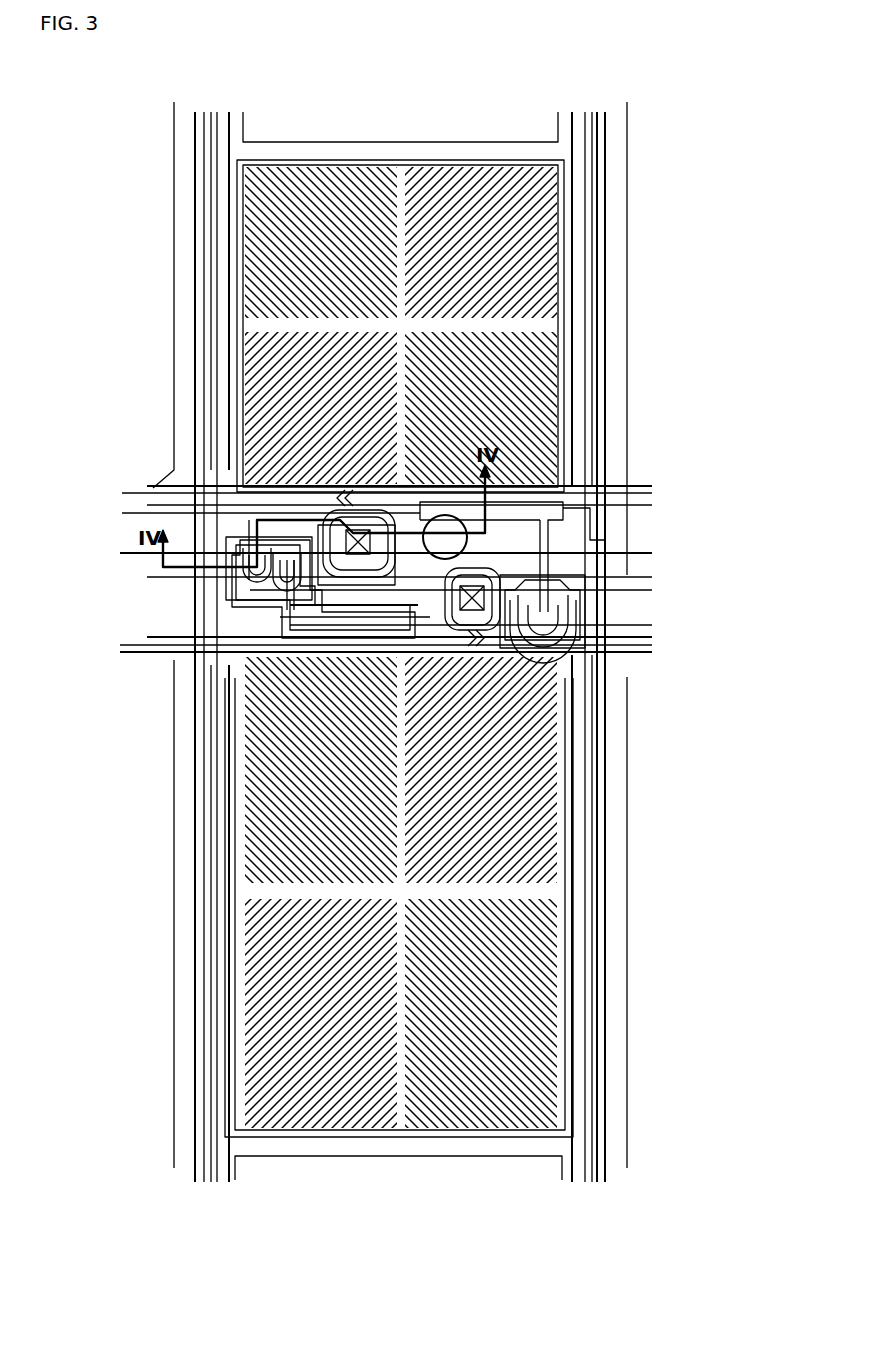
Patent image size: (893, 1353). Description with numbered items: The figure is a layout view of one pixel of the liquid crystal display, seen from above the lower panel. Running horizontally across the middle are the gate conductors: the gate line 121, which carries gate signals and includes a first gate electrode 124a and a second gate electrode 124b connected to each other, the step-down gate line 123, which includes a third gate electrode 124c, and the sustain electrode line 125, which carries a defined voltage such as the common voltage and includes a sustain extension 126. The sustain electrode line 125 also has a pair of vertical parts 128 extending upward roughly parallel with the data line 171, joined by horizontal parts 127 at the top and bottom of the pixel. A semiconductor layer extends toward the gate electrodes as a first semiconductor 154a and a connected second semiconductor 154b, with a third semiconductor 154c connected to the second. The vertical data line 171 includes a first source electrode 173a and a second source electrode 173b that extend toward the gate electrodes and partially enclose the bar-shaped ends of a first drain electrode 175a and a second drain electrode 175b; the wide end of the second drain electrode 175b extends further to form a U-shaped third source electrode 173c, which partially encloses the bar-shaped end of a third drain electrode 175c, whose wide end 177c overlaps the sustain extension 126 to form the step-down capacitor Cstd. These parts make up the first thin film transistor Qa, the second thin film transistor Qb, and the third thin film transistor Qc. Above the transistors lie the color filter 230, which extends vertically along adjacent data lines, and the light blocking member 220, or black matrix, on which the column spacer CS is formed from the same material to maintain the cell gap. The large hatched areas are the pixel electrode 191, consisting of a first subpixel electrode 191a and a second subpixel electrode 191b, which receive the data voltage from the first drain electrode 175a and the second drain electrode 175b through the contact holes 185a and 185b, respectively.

The horizontal parts 127 is at (512, 160).
The light blocking member 220 is at (590, 206).
The color filter 230 is at (190, 216).
The data line 171 is at (212, 266).
The vertical parts 128 is at (583, 311).
The first subpixel electrode 191a is at (580, 360).
The second subpixel electrode 191b is at (580, 856).
The pixel electrode 191 is at (505, 647).
The second gate electrode 124b is at (298, 530).
The second thin film transistor Qb is at (330, 516).
The second source electrode 173b is at (166, 487).
The column spacer CS is at (456, 516).
The step-down capacitor Cstd is at (518, 501).
The wide end 177c is at (600, 488).
The sustain electrode line 125 is at (627, 512).
The sustain extension 126 is at (605, 548).
The gate line 121 is at (633, 553).
The first thin film transistor Qa is at (230, 537).
The first drain electrode 175a is at (160, 566).
The first semiconductor 154a is at (236, 562).
The third drain electrode 175c is at (580, 590).
The third gate electrode 124c is at (590, 613).
The step-down gate line 123 is at (633, 637).
The first source electrode 173a is at (237, 598).
The first gate electrode 124a is at (240, 626).
The second drain electrode 175b is at (286, 592).
The third source electrode 173c is at (605, 658).
The third thin film transistor Qc is at (551, 657).
The second semiconductor 154b is at (333, 582).
The third semiconductor 154c is at (535, 652).
The contact hole 185a is at (354, 556).
The contact hole 185b is at (482, 614).